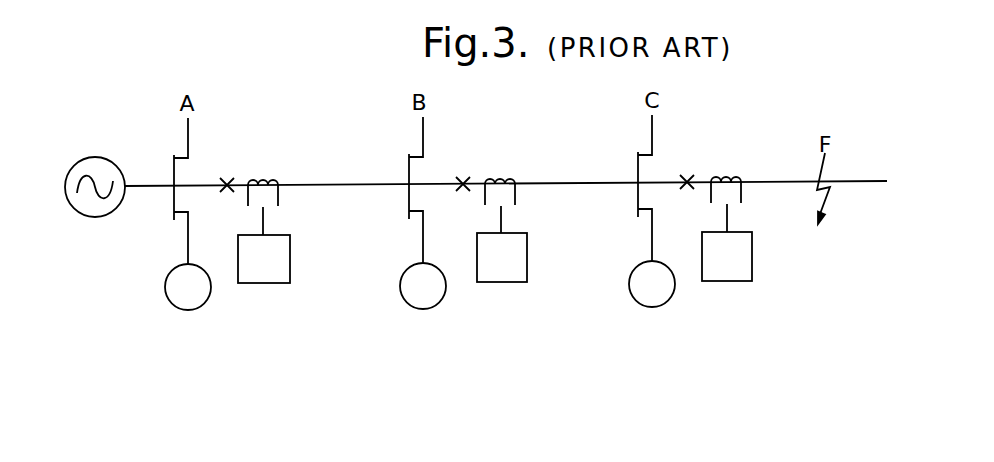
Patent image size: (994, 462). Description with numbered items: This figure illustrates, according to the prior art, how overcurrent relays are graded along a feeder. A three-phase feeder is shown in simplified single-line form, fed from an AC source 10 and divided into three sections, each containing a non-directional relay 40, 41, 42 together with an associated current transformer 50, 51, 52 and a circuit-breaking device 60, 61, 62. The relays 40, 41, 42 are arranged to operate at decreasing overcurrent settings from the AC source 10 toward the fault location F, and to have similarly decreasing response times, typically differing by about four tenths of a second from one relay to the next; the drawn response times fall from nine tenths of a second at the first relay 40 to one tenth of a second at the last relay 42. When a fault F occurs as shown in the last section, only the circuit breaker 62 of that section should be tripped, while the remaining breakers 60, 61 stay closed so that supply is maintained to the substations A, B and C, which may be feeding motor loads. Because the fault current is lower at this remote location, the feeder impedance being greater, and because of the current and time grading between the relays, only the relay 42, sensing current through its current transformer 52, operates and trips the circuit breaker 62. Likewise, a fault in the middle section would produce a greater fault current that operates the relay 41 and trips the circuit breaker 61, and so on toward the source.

The AC source 10 is at (85, 218).
The circuit-breaking device 60 is at (228, 178).
The circuit-breaking device 61 is at (465, 158).
The circuit-breaking device 62 is at (688, 157).
The current transformer 50 is at (263, 178).
The current transformer 51 is at (503, 165).
The current transformer 52 is at (730, 164).
The non-directional relay 40 is at (263, 284).
The non-directional relay 41 is at (540, 273).
The non-directional relay 42 is at (767, 271).